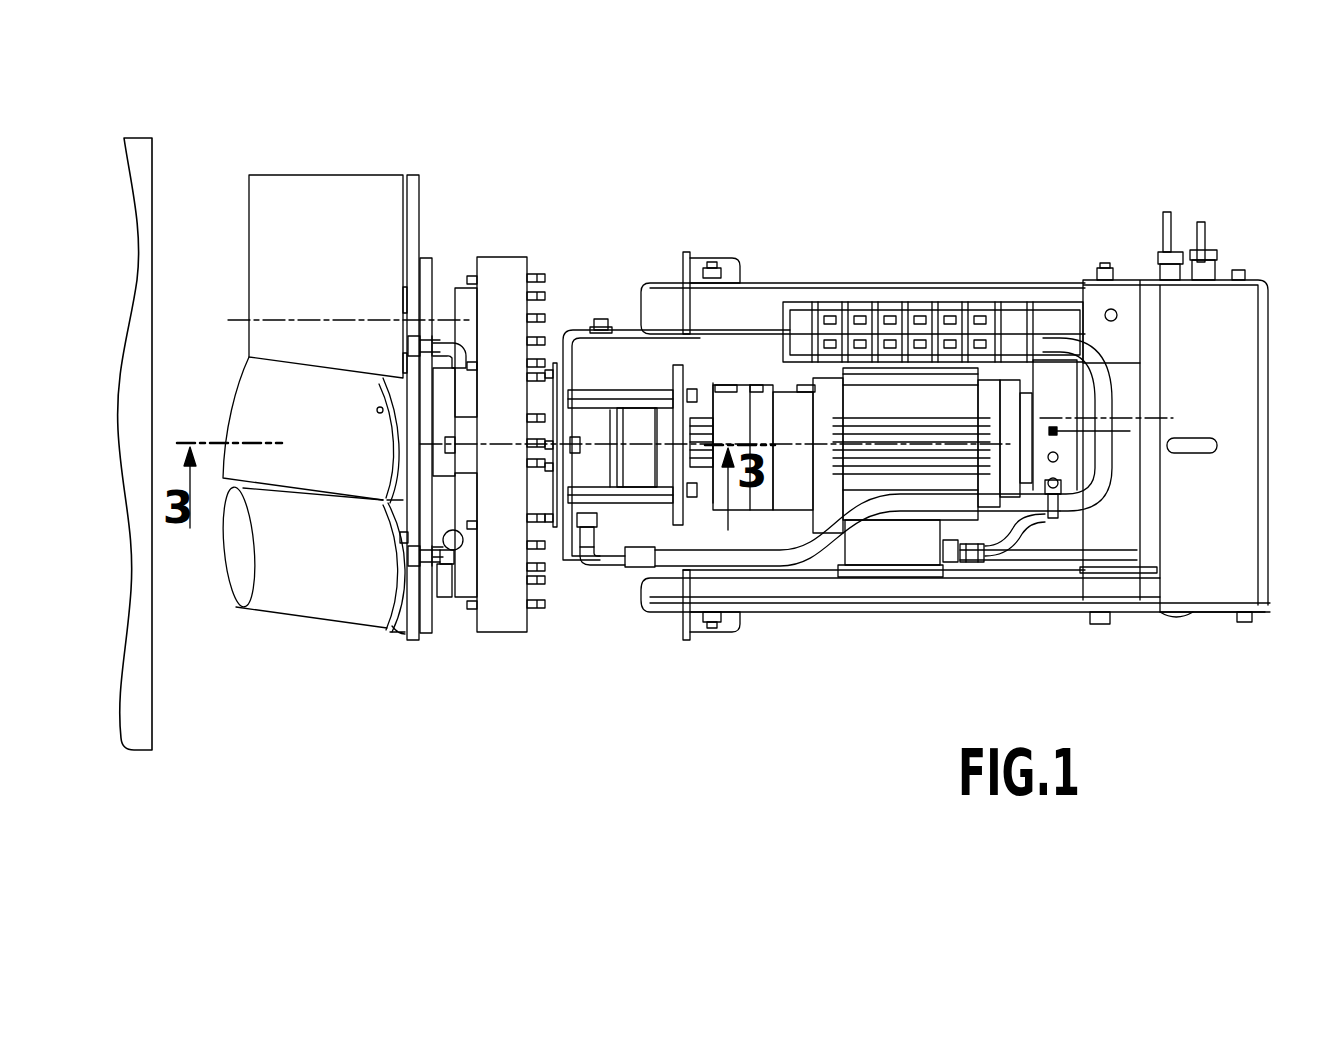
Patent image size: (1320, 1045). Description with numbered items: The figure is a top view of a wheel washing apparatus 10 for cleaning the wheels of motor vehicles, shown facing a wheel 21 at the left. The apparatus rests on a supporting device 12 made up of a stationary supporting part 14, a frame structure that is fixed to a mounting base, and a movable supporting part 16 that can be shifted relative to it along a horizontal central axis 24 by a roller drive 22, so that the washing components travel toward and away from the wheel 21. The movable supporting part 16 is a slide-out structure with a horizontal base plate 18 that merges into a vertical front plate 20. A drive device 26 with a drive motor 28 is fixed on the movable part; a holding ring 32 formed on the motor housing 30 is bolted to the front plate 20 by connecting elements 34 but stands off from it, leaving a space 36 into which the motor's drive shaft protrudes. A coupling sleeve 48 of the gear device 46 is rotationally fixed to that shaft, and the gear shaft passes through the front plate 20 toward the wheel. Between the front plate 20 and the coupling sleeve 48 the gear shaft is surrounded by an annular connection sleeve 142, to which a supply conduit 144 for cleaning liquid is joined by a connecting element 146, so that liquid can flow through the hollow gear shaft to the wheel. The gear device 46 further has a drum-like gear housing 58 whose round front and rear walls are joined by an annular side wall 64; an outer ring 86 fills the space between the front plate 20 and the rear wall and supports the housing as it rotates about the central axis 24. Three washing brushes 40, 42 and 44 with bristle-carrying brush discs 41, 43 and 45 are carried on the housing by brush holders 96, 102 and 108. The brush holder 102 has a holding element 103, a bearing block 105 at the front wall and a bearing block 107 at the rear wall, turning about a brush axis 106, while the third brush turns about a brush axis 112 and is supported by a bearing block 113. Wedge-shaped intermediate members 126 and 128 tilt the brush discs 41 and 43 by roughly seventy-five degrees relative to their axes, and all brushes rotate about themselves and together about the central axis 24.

The wheel washing apparatus 10 is at (838, 212).
The supporting device 12 is at (747, 265).
The stationary supporting part 14 is at (707, 303).
The movable supporting part 16 is at (635, 340).
The horizontal base plate 18 is at (650, 347).
The vertical front plate 20 is at (557, 368).
The wheel 21 is at (152, 214).
The roller drive 22 is at (1093, 580).
The central axis 24 is at (373, 462).
The drive device 26 is at (948, 383).
The drive motor 28 is at (913, 397).
The motor housing 30 is at (700, 413).
The holding ring 32 is at (688, 383).
The connecting elements 34 is at (637, 391).
The space 36 is at (617, 458).
The washing brush 40 is at (246, 402).
The brush disc 41 is at (383, 425).
The washing brush 42 is at (268, 600).
The brush disc 43 is at (387, 637).
The washing brush 44 is at (298, 195).
The brush disc 45 is at (417, 197).
The gear device 46 is at (522, 248).
The coupling sleeve 48 is at (635, 420).
The gear housing 58 is at (518, 627).
The side wall 64 is at (493, 267).
The outer ring 86 is at (547, 483).
The brush holder 96 is at (440, 407).
The brush holder 102 is at (443, 605).
The holding element 103 is at (425, 625).
The bearing block 105 is at (462, 597).
The brush axis 106 is at (393, 563).
The bearing block 107 is at (533, 577).
The brush holder 108 is at (440, 283).
The brush axis 112 is at (288, 318).
The bearing block 113 is at (533, 293).
The wedge-shaped intermediate member 126 is at (397, 493).
The wedge-shaped intermediate member 128 is at (412, 633).
The connection sleeve 142 is at (583, 427).
The supply conduit 144 is at (787, 557).
The connecting element 146 is at (595, 512).